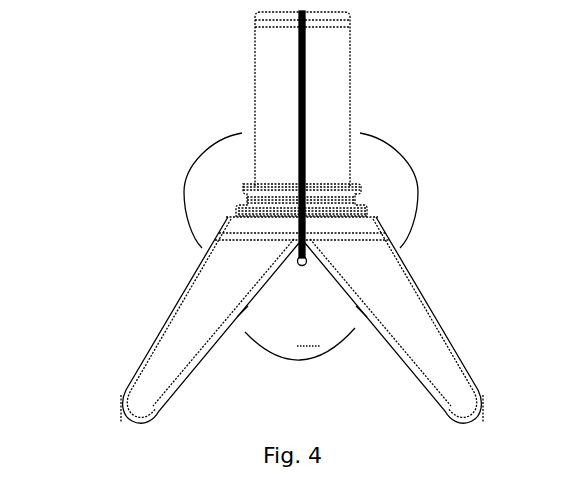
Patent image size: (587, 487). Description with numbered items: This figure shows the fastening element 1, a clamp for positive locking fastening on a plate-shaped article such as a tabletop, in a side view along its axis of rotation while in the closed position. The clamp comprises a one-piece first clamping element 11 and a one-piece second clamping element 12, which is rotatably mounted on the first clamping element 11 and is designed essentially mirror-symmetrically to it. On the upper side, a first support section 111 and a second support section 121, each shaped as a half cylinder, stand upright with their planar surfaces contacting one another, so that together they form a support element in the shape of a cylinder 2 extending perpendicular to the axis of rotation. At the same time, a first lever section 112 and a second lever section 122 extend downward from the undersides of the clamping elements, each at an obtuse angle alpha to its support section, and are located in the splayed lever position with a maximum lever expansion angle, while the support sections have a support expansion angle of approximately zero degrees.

The fastening element 1 is at (144, 147).
The cylinder 2 is at (246, 72).
The first clamping element 11 is at (171, 279).
The second clamping element 12 is at (366, 103).
The first support section 111 is at (275, 128).
The first lever section 112 is at (178, 342).
The second support section 121 is at (333, 55).
The second lever section 122 is at (383, 288).